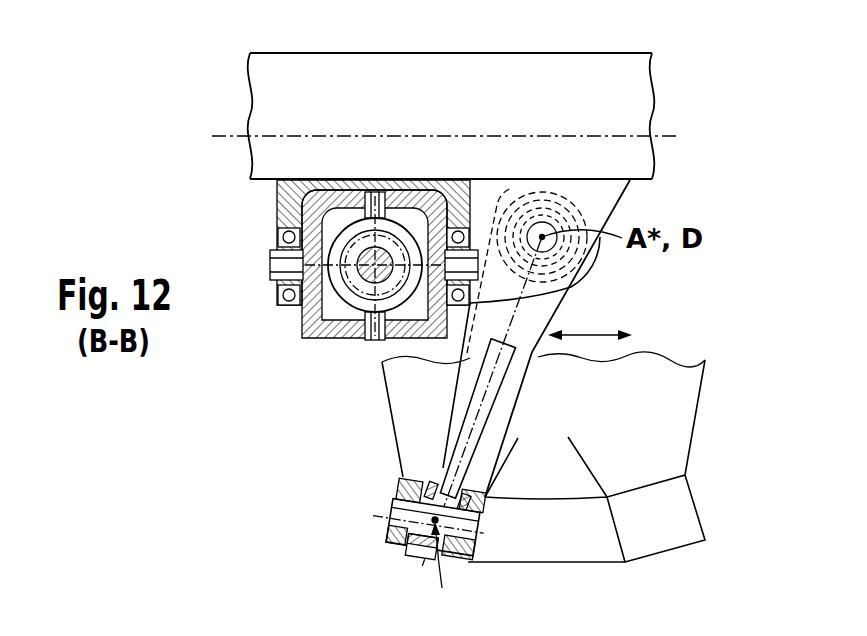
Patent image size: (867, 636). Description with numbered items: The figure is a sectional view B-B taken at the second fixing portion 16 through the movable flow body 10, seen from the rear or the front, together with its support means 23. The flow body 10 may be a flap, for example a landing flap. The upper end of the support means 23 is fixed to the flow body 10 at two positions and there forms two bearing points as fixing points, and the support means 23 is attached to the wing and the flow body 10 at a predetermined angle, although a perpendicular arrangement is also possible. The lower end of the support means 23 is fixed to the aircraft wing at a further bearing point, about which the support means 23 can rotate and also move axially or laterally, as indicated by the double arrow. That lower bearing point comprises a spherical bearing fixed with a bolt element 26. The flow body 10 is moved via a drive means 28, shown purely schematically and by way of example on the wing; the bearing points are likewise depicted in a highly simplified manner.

The flow body 10 is at (518, 78).
The second fixing portion 16 is at (364, 526).
The support means 23 is at (460, 405).
The bolt element 26 is at (403, 499).
The drive means 28 is at (336, 291).